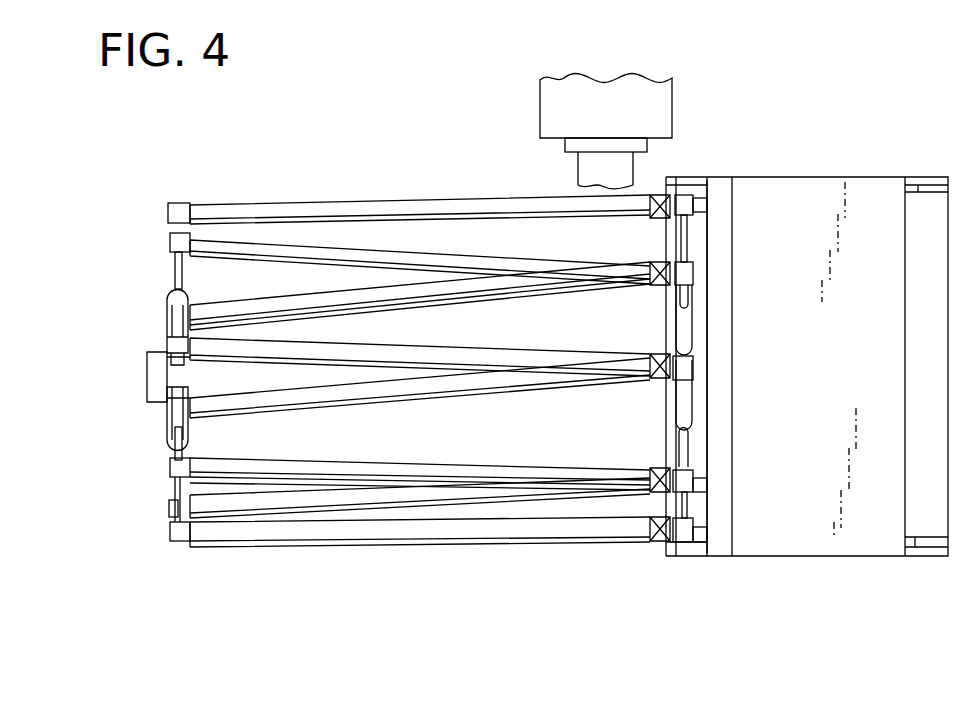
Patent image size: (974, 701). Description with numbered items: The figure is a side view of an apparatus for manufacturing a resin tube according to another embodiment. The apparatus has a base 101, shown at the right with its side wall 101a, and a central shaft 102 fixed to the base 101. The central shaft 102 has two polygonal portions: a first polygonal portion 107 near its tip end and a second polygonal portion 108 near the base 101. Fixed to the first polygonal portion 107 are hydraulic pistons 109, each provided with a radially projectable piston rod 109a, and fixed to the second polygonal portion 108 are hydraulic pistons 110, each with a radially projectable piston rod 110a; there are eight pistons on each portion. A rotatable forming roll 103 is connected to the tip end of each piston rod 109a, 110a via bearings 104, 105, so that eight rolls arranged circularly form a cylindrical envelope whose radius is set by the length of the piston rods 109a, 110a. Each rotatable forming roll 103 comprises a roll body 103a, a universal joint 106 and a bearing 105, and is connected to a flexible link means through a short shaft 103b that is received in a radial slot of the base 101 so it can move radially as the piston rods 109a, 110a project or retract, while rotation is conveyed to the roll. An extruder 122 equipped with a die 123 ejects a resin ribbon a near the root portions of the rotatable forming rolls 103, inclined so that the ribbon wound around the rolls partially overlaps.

The base 101 is at (852, 176).
The frame side wall 101a is at (723, 520).
The central shaft 102 is at (357, 384).
The rotatable forming roll 103 is at (262, 226).
The roll body 103a is at (342, 228).
The short shaft 103b is at (700, 484).
The bearing 104 is at (168, 242).
The bearing 105 is at (694, 180).
The universal joint 106 is at (649, 219).
The first polygonal portion 107 is at (150, 372).
The second polygonal portion 108 is at (700, 352).
The hydraulic piston 109 is at (168, 320).
The piston rod 109a is at (175, 270).
The hydraulic piston 110 is at (688, 340).
The piston rod 110a is at (693, 210).
The extruder 122 is at (675, 86).
The die 123 is at (565, 145).
The resin ribbon a is at (578, 170).